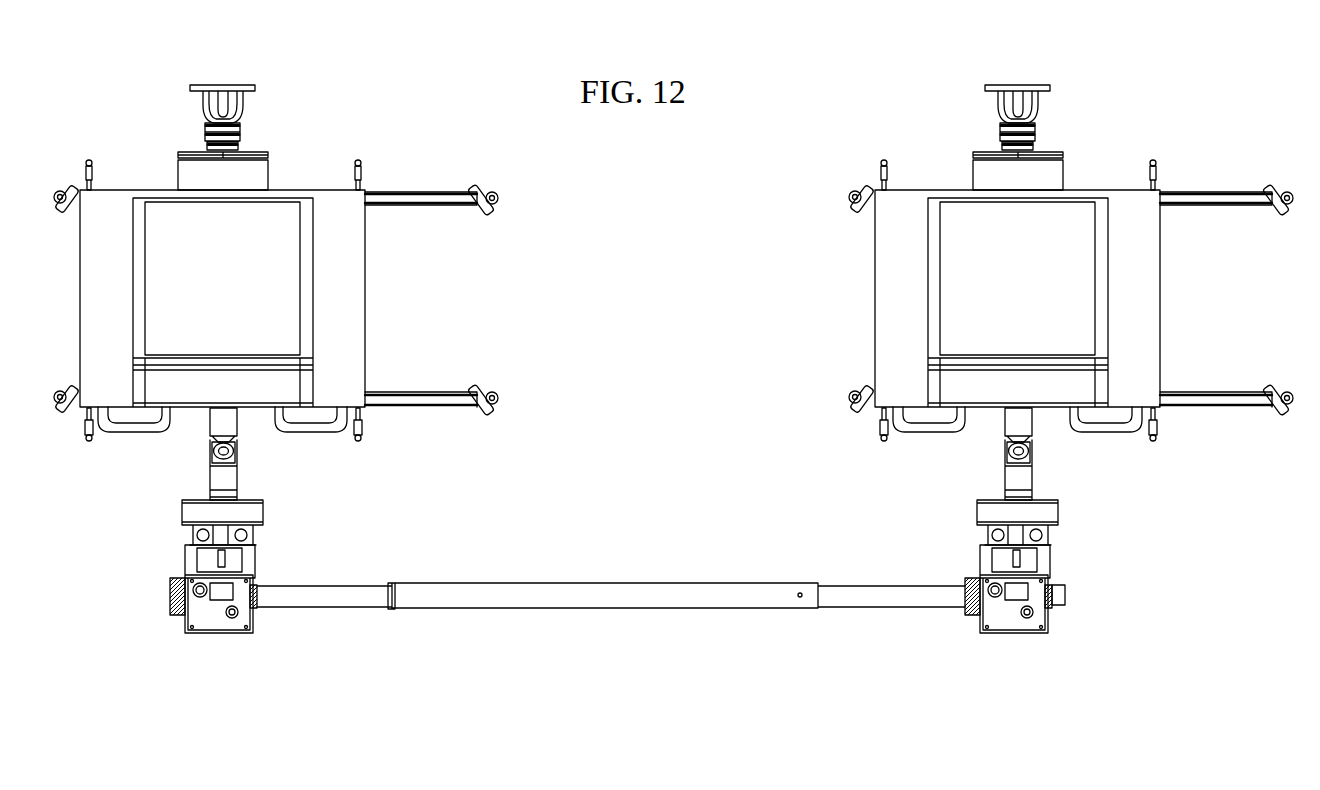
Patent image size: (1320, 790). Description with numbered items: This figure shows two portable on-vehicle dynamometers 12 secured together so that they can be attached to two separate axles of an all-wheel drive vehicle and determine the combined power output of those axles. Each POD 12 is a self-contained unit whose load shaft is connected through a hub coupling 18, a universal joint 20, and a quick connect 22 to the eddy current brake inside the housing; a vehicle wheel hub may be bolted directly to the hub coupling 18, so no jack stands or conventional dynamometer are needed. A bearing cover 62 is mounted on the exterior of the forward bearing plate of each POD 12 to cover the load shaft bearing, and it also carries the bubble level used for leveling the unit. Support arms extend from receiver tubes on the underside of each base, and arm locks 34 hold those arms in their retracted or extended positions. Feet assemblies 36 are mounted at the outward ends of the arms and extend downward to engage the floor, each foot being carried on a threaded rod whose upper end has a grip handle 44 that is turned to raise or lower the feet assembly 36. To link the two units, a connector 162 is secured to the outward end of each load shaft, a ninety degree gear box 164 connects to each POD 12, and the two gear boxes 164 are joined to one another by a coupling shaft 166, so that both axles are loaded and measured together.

The portable on-vehicle dynamometer 12 is at (392, 282).
The hub coupling 18 is at (216, 84).
The universal joint 20 is at (208, 455).
The quick connect 22 is at (203, 130).
The arm lock 34 is at (91, 158).
The feet assembly 36 is at (488, 185).
The grip handle 44 is at (473, 185).
The bearing cover 62 is at (178, 175).
The connector 162 is at (238, 420).
The ninety degree gear box 164 is at (218, 635).
The coupling shaft 166 is at (633, 608).